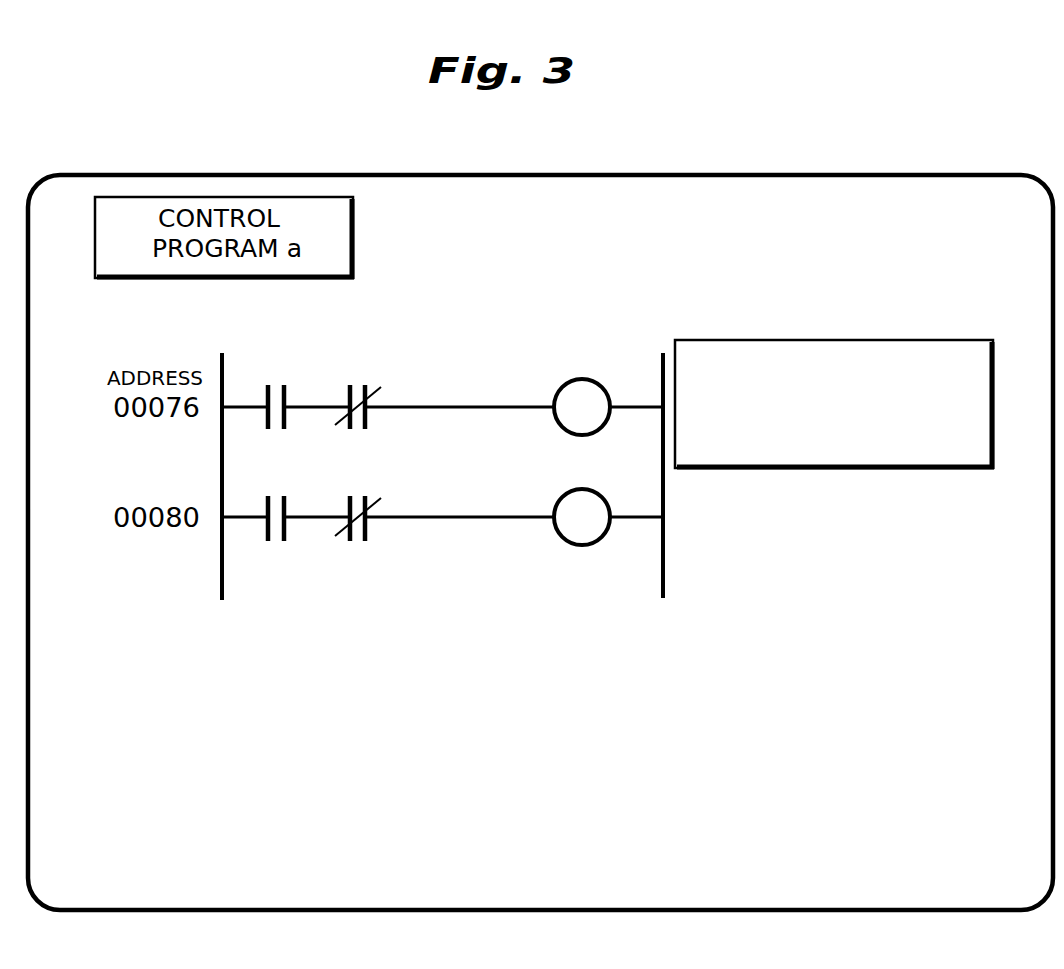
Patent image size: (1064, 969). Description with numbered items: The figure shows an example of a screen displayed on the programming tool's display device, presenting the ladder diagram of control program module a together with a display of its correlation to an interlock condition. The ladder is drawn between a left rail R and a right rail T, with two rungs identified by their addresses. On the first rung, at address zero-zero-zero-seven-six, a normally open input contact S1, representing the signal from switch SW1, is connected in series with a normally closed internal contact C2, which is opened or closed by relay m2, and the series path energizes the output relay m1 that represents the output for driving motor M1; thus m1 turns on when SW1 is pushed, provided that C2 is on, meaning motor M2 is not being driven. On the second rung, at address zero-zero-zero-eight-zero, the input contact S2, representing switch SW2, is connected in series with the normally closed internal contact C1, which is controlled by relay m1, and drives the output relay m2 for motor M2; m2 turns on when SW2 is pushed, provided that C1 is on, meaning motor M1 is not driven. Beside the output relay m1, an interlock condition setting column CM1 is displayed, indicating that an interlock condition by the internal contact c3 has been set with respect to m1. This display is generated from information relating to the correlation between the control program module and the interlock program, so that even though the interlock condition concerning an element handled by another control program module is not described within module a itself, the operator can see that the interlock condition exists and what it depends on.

The interlock condition setting column CM1 is at (900, 340).
The left power rail R is at (220, 457).
The right power rail T is at (663, 456).
The input contact S1 is at (277, 389).
The input contact S2 is at (276, 500).
The internal contact C1 is at (358, 500).
The internal contact C2 is at (358, 389).
The output relay m1 is at (582, 407).
The output relay m2 is at (582, 517).